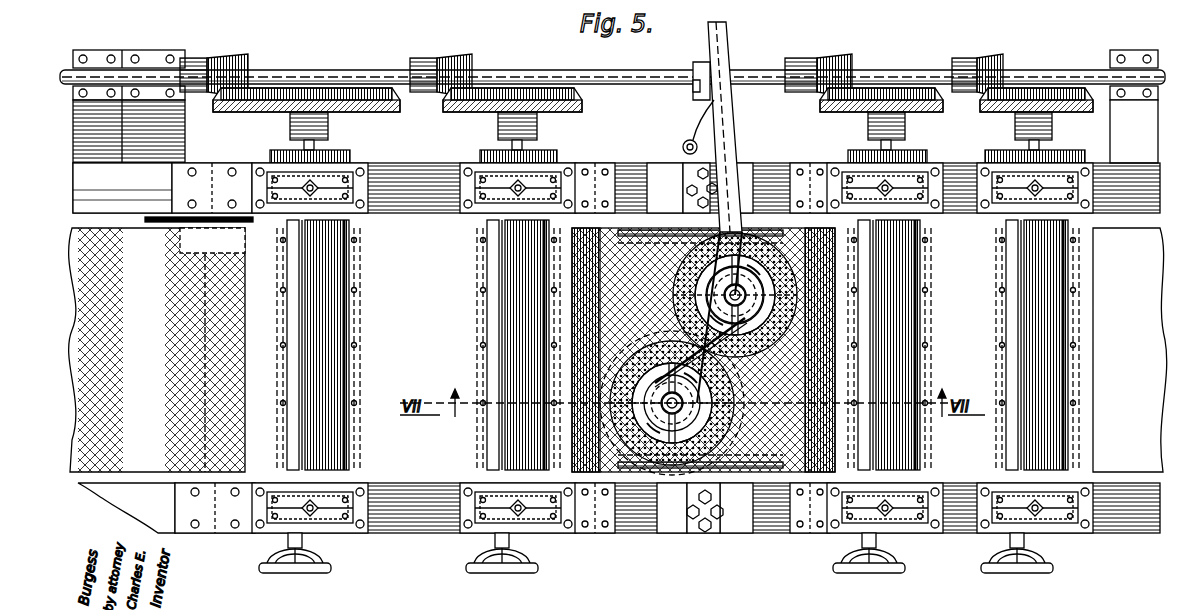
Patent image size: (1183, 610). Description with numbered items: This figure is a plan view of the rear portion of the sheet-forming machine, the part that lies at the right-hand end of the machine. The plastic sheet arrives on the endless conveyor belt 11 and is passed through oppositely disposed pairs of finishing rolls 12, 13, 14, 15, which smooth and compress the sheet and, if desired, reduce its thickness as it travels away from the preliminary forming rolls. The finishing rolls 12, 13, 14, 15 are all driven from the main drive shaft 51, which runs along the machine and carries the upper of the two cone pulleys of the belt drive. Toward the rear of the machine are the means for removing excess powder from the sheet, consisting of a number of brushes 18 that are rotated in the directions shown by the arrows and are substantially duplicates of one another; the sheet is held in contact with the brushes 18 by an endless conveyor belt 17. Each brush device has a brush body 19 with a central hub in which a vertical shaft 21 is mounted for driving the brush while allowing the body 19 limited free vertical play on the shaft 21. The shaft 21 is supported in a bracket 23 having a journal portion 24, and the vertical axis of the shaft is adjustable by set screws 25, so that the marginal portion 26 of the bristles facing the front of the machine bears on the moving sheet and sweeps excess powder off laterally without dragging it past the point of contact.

The main drive shaft 51 is at (334, 76).
The endless conveyor belt 11 is at (157, 350).
The finishing roll 12 is at (310, 318).
The finishing roll 13 is at (515, 318).
The finishing roll 14 is at (890, 338).
The finishing roll 15 is at (1035, 318).
The endless conveyor belt 17 is at (703, 350).
The brush 18 is at (630, 366).
The brush body 19 is at (722, 335).
The vertical shaft 21 is at (723, 287).
The bracket 23 is at (690, 283).
The journal portion 24 is at (790, 353).
The set screw 25 is at (713, 182).
The marginal portion of the bristles 26 is at (667, 317).